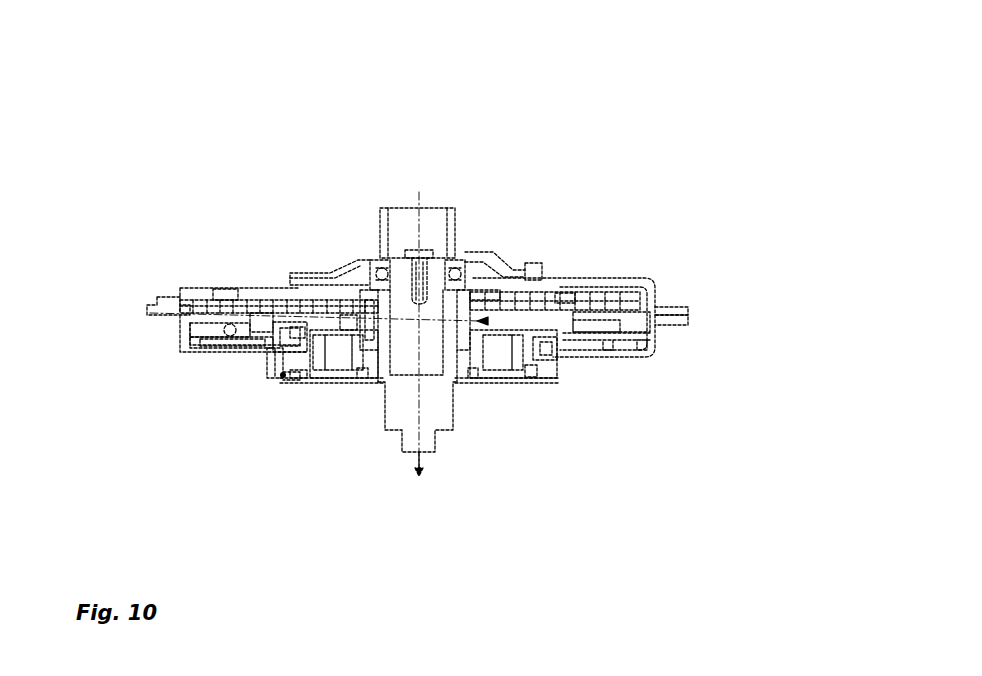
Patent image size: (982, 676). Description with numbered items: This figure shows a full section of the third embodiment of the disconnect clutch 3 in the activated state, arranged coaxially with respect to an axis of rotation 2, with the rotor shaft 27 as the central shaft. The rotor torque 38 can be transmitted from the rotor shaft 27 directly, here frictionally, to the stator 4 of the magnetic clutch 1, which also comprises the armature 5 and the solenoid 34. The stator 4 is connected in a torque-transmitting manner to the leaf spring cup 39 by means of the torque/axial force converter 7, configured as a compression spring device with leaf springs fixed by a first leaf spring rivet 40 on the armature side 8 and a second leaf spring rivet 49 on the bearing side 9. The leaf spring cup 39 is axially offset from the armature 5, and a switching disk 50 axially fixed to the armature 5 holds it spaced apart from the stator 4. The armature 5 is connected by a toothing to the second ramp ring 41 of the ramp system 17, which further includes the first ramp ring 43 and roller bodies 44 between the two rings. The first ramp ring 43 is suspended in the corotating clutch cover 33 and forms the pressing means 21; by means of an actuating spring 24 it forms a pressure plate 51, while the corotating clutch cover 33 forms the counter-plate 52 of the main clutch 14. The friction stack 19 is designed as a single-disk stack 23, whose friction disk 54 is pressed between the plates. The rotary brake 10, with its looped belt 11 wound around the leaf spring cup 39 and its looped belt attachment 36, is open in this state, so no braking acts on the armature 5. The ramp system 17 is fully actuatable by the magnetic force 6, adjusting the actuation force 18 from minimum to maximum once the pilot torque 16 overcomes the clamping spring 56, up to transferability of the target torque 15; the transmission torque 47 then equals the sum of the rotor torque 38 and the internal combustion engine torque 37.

The disconnect clutch 3 is at (770, 62).
The internal combustion engine torque 37 is at (418, 205).
The rotor shaft 27 is at (380, 396).
The rotor torque 38 is at (370, 412).
The axis of rotation 2 is at (432, 454).
The transmission torque 47 is at (415, 456).
The clamping spring 56 is at (179, 267).
The actuating spring 24 is at (215, 293).
The target torque 15 is at (215, 312).
The torque/axial force converter 7 is at (410, 233).
The first leaf spring rivet 40 is at (279, 254).
The armature side 8 is at (296, 300).
The second leaf spring rivet 49 is at (470, 254).
The bearing side 9 is at (350, 302).
The ramp system 17 is at (175, 381).
The pressing means 21 is at (174, 358).
The first ramp ring 43 is at (195, 352).
The roller bodies 44 is at (205, 335).
The second ramp ring 41 is at (225, 325).
The switching disk 50 is at (270, 348).
The rotary brake 10 is at (266, 415).
The looped belt 11 is at (270, 375).
The looped belt attachment 36 is at (286, 382).
The main clutch 14 is at (677, 276).
The counter-plate 52 is at (648, 276).
The corotating clutch cover 33 is at (655, 283).
The single-disk stack 23 is at (742, 292).
The friction stack 19 is at (697, 292).
The friction disk 54 is at (656, 305).
The pressure plate 51 is at (697, 309).
The leaf spring cup 39 is at (562, 305).
The magnetic force 6 is at (527, 297).
The actuation force 18 is at (590, 337).
The pilot torque 16 is at (600, 340).
The magnetic clutch 1 is at (539, 409).
The solenoid 34 is at (524, 376).
The stator 4 is at (546, 362).
The armature 5 is at (575, 352).